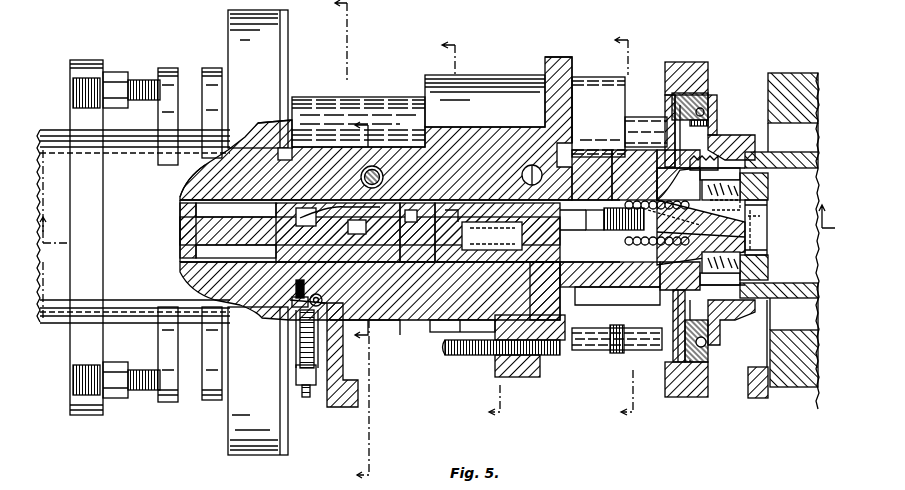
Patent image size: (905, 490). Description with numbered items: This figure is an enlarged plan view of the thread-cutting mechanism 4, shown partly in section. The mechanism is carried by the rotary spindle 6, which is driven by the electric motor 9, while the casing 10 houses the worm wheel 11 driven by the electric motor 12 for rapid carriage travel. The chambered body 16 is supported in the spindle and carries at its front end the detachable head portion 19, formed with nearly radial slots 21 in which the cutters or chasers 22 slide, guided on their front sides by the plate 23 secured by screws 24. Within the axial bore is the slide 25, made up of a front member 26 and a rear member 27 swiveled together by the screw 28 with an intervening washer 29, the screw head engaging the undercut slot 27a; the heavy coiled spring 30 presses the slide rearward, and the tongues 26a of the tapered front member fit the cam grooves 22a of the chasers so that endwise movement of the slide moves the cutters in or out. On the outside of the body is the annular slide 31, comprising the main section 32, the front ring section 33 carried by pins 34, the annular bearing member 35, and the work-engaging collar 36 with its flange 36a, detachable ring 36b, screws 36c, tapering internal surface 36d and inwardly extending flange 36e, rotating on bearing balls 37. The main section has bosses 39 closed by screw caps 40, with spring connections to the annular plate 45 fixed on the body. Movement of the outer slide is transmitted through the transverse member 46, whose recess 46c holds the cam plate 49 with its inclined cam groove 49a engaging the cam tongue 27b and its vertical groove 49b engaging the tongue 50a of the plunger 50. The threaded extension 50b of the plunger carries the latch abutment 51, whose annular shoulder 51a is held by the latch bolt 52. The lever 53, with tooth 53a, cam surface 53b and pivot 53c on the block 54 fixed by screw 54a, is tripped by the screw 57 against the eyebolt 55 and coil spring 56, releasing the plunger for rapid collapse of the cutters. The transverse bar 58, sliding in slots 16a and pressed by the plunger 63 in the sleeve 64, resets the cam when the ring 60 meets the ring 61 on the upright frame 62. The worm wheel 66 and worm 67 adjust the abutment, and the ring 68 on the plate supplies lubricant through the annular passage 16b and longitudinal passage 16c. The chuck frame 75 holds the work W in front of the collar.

The thread-cutting mechanism 4 is at (672, 432).
The rotary spindle 6 is at (48, 130).
The electric motor 9 is at (615, 228).
The casing 10 is at (460, 230).
The worm wheel 11 is at (340, 240).
The electric motor 12 is at (374, 231).
The chambered body 16 is at (60, 320).
The slots 16a is at (262, 190).
The annular passage 16b is at (262, 150).
The longitudinal passage 16c is at (428, 303).
The detachable head portion 19 is at (625, 288).
The radial slots 21 is at (705, 285).
The cutter or chaser 22 is at (760, 180).
The cam grooves 22a is at (696, 232).
The plate 23 is at (766, 242).
The screws 24 is at (768, 206).
The slide 25 is at (596, 268).
The front member 26 is at (670, 200).
The tongues 26a is at (762, 218).
The rear member 27 is at (501, 178).
The undercut slot 27a is at (576, 175).
The cam tongue 27b is at (482, 200).
The screw 28 is at (630, 225).
The washer 29 is at (615, 175).
The coiled spring 30 is at (636, 200).
The annular slide 31 is at (542, 57).
The main section 32 is at (494, 127).
The front ring section 33 is at (696, 62).
The pins 34 is at (640, 117).
The annular bearing member 35 is at (700, 93).
The work-engaging collar 36 is at (734, 140).
The flange 36a is at (714, 98).
The detachable ring 36b is at (664, 355).
The screws 36c is at (680, 122).
The tapering internal surface 36d is at (740, 372).
The inwardly extending flange 36e is at (737, 333).
The bearing balls 37 is at (706, 114).
The bosses 39 is at (504, 80).
The screw caps 40 is at (625, 77).
The annular plate 45 is at (266, 122).
The bar or plate member 46 is at (504, 280).
The recess 46c is at (457, 300).
The cam plate 49 is at (478, 215).
The inclined cam groove 49a is at (480, 247).
The vertical groove 49b is at (452, 247).
The plunger 50 is at (418, 218).
The tongue 50a is at (450, 171).
The threaded extension 50b is at (412, 163).
The latch abutment 51 is at (311, 190).
The annular shoulder 51a is at (333, 191).
The latch bolt 52 is at (377, 287).
The lever 53 is at (346, 407).
The tooth 53a is at (390, 300).
The cam surface 53b is at (360, 340).
The pivot 53c is at (290, 312).
The block 54 is at (268, 257).
The screw 54a is at (250, 270).
The eyebolt 55 is at (300, 355).
The coil spring 56 is at (304, 385).
The screw 57 is at (484, 355).
The transverse bar 58 is at (288, 160).
The ring 60 is at (212, 68).
The ring 61 is at (187, 213).
The upright frame 62 is at (85, 60).
The plunger 63 is at (180, 228).
The sleeve 64 is at (180, 198).
The worm wheel 66 is at (378, 166).
The worm 67 is at (380, 172).
The ring 68 is at (234, 25).
The rectangular frame 75 is at (782, 73).
The workpiece W is at (802, 115).